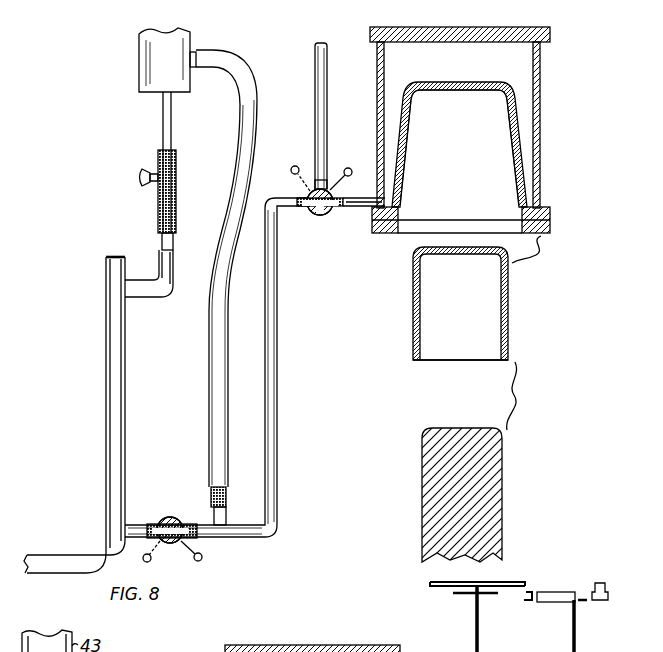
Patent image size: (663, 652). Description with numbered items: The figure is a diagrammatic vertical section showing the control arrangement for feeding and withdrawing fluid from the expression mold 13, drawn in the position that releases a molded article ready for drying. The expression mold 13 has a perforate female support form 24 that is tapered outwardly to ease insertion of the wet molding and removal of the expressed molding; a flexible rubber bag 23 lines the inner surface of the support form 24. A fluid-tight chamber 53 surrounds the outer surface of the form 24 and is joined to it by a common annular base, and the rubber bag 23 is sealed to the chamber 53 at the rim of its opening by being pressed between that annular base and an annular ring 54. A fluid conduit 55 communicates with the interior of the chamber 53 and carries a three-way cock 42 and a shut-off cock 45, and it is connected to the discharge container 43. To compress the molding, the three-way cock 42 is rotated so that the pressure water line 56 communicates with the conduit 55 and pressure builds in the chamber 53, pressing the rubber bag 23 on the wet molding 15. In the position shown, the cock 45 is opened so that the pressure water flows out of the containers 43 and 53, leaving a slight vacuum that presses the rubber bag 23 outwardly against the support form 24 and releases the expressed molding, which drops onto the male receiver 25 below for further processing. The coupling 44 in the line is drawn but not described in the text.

The expression mold 13 is at (545, 99).
The wet molding 15 is at (508, 305).
The rubber bag 23 is at (468, 90).
The perforate female support form 24 is at (480, 82).
The male receiver 25 is at (494, 450).
The three-way cock 42 is at (318, 216).
The discharge container 43 is at (146, 62).
The union coupling 44 is at (173, 180).
The shut-off cock 45 is at (178, 519).
The fluid-tight chamber 53 is at (540, 129).
The annular ring 54 is at (388, 234).
The fluid conduit 55 is at (367, 208).
The pressure water line 56 is at (327, 100).